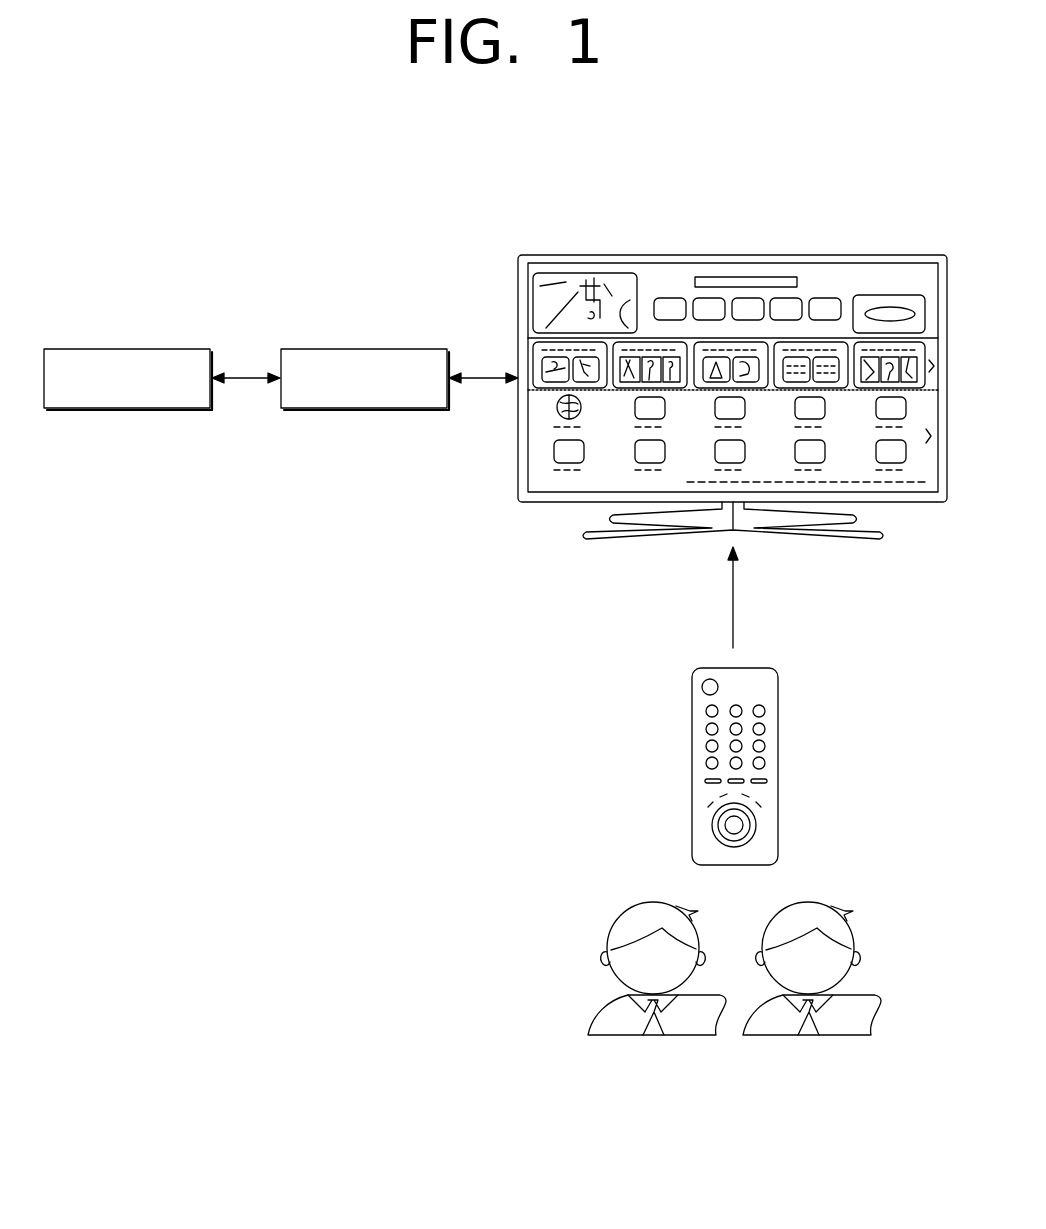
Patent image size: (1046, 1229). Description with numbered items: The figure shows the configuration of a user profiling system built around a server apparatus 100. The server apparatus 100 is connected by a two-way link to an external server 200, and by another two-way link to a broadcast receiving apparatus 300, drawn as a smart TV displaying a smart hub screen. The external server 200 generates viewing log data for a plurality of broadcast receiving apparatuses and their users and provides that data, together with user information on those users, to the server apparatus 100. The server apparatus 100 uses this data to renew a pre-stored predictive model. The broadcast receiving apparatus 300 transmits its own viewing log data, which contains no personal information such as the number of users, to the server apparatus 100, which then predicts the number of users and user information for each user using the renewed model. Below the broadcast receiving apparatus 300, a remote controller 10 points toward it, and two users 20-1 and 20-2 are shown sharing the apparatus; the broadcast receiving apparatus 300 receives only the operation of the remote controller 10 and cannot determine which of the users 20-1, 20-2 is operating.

The remote controller 10 is at (779, 767).
The user 20-1 is at (600, 956).
The user 20-2 is at (861, 958).
The server apparatus 100 is at (414, 348).
The external server 200 is at (143, 348).
The broadcast receiving apparatus 300 is at (887, 254).